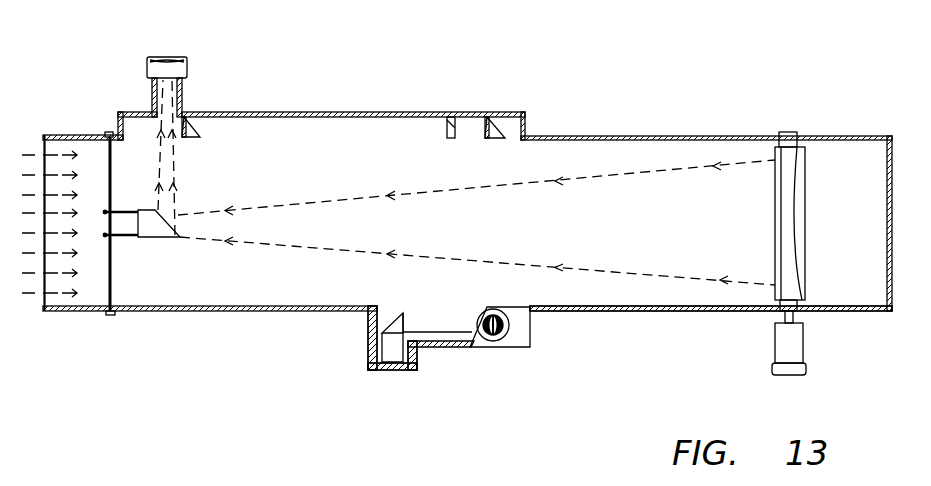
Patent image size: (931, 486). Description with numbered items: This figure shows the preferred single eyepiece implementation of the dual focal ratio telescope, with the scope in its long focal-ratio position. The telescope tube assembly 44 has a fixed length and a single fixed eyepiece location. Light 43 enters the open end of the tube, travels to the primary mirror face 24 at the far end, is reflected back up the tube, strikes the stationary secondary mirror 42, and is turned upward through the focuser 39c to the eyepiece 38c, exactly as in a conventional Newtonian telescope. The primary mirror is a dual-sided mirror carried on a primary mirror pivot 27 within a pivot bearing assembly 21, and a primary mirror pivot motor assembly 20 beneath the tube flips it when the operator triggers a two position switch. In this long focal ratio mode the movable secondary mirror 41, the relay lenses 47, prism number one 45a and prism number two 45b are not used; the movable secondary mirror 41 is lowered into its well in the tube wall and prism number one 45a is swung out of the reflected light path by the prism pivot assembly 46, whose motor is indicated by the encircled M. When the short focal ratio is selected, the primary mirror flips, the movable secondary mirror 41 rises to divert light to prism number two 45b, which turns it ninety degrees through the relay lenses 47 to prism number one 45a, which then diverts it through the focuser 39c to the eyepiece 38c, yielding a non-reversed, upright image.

The primary mirror pivot motor assembly 20 is at (792, 352).
The pivot bearing assembly 21 is at (790, 142).
The primary mirror face 24 is at (795, 198).
The primary mirror pivot 27 is at (808, 137).
The eyepiece 38c is at (157, 57).
The focuser 39c is at (152, 102).
The movable secondary mirror 41 is at (397, 340).
The stationary secondary mirror 42 is at (145, 232).
The light 43 is at (652, 172).
The telescope tube assembly 44 is at (598, 313).
The prism number one 45a is at (198, 117).
The prism number two 45b is at (489, 116).
The prism pivot assembly 46 is at (310, 113).
The relay lenses 47 is at (441, 116).